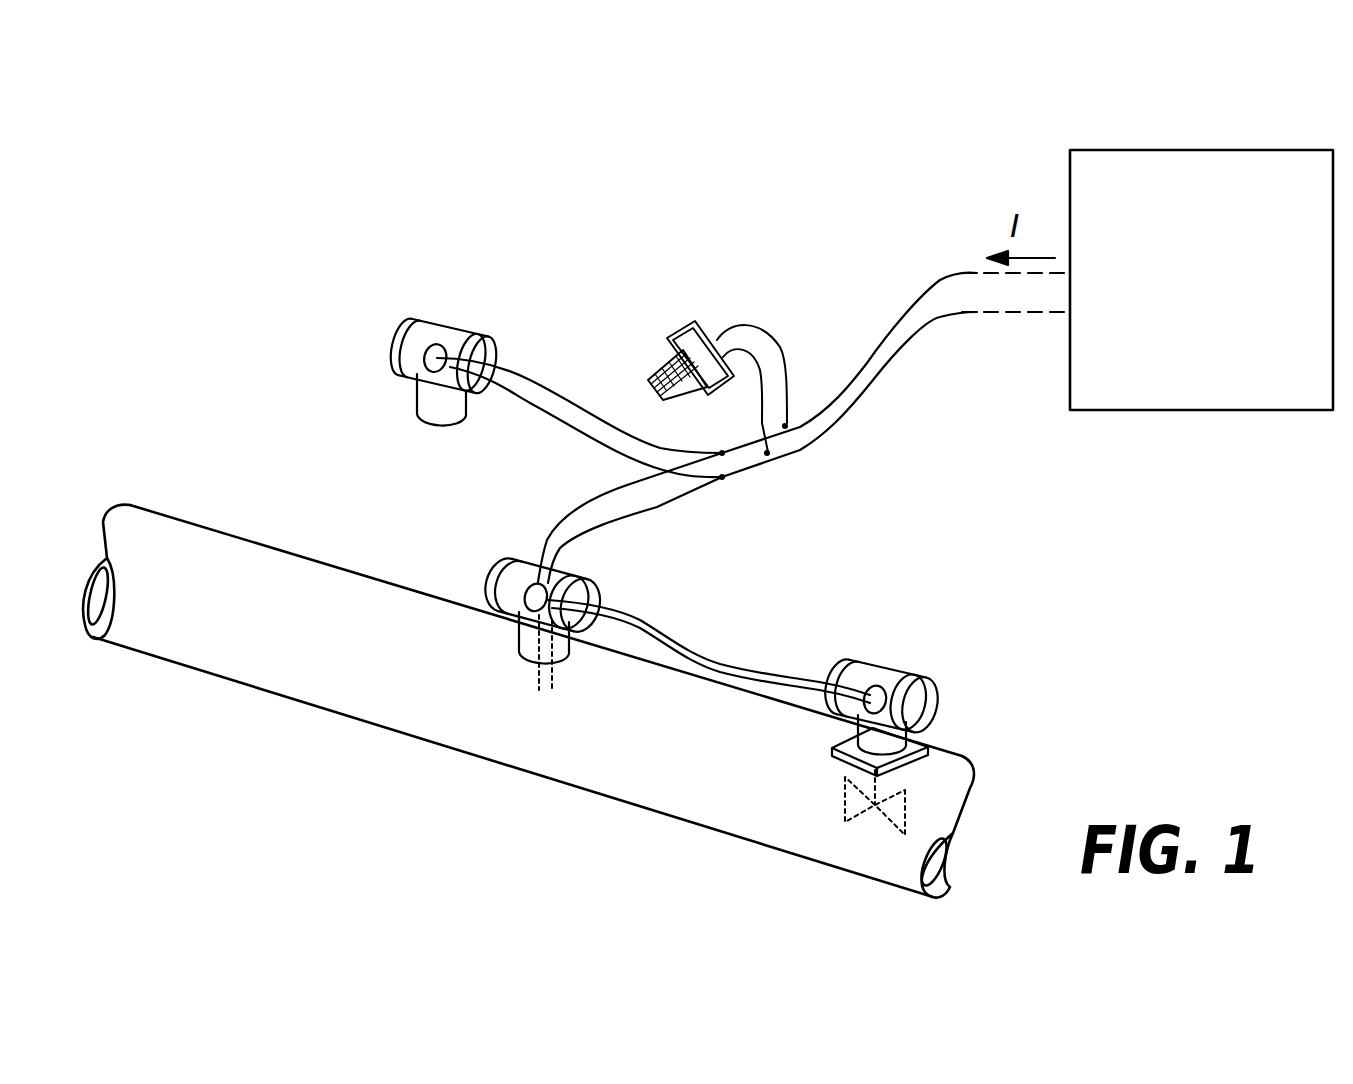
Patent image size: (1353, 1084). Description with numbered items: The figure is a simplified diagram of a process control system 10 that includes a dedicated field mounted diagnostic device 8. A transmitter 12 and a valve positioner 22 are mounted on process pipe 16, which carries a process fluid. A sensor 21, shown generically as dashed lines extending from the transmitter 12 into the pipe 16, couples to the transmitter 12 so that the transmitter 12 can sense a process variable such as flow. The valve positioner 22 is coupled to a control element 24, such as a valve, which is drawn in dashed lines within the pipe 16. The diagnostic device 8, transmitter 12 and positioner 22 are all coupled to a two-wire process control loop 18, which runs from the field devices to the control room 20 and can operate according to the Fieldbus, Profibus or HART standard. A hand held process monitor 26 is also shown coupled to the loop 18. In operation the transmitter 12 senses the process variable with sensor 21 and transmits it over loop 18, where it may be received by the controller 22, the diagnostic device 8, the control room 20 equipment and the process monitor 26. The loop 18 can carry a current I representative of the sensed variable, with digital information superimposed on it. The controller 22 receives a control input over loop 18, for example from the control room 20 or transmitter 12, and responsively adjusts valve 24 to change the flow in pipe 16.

The diagnostic device 8 is at (420, 332).
The process control system 10 is at (456, 256).
The transmitter 12 is at (530, 557).
The process pipe 16 is at (323, 710).
The two-wire process control loop 18 is at (633, 485).
The control room 20 is at (1137, 412).
The sensor 21 is at (552, 684).
The valve positioner 22 is at (900, 673).
The valve 24 is at (840, 800).
The process monitor 26 is at (680, 325).